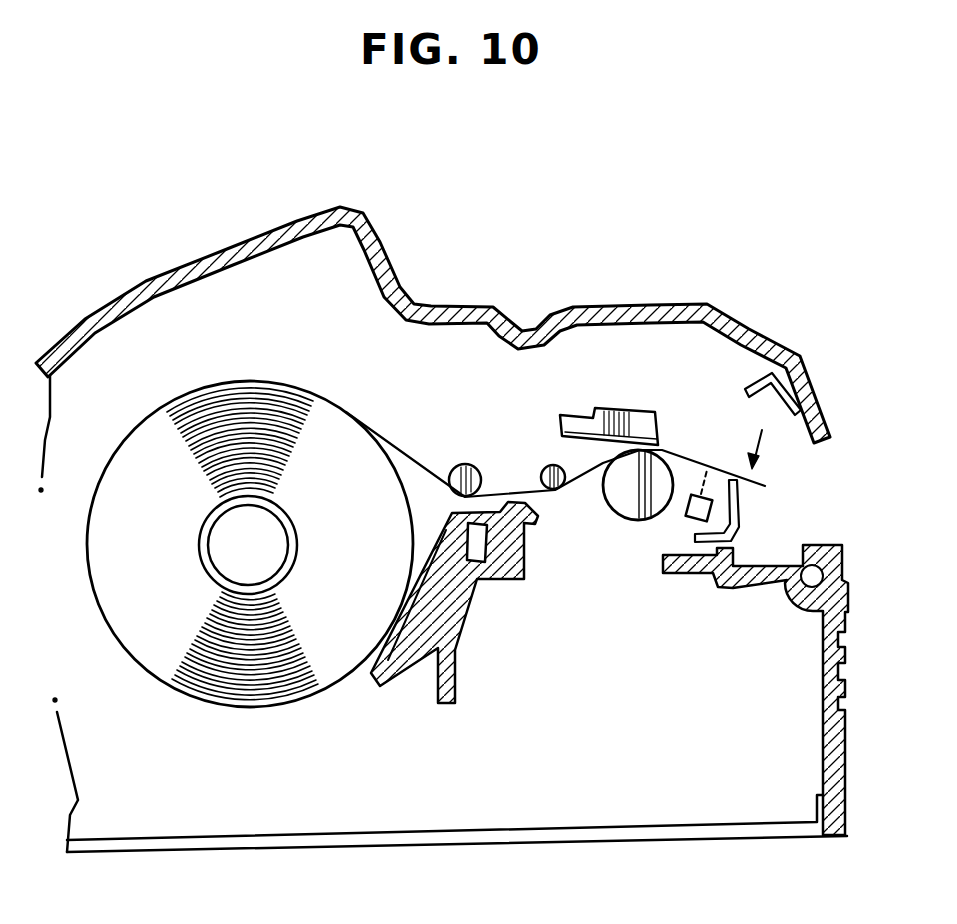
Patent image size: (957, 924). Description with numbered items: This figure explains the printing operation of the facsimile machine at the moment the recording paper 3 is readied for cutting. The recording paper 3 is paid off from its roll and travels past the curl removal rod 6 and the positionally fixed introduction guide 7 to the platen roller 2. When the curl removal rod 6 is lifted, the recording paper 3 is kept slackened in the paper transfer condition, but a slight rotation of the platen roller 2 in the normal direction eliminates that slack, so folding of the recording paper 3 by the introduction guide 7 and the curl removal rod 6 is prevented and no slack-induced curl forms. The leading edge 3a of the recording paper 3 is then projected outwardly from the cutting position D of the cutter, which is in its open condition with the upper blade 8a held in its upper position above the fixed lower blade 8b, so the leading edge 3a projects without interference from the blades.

The platen/transfer roller 2 is at (627, 520).
The recording paper 3 is at (413, 462).
The leading edge of the recording paper 3a is at (322, 392).
The curl removal rod 6 is at (553, 465).
The introduction guide 7 is at (513, 585).
The upper blade 8a is at (760, 381).
The lower blade 8b is at (745, 518).
The cutting position D is at (746, 437).